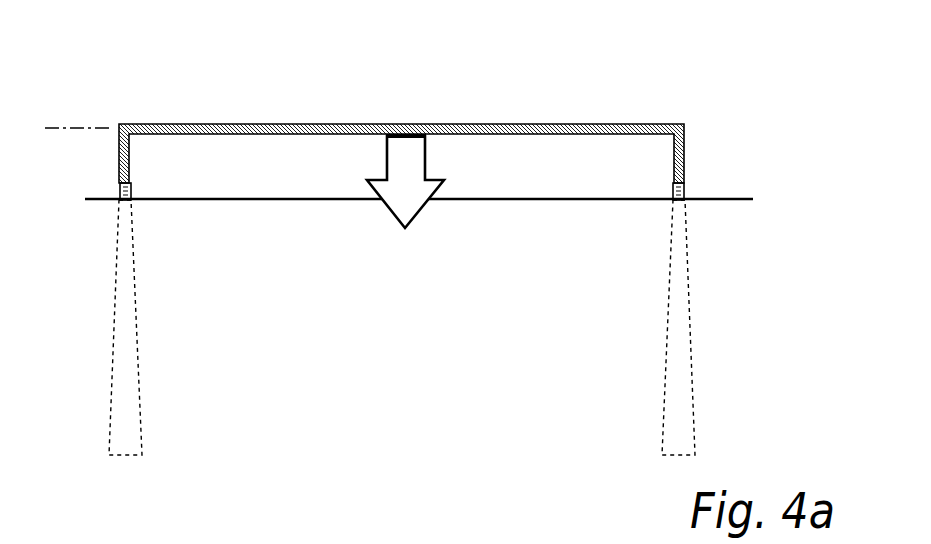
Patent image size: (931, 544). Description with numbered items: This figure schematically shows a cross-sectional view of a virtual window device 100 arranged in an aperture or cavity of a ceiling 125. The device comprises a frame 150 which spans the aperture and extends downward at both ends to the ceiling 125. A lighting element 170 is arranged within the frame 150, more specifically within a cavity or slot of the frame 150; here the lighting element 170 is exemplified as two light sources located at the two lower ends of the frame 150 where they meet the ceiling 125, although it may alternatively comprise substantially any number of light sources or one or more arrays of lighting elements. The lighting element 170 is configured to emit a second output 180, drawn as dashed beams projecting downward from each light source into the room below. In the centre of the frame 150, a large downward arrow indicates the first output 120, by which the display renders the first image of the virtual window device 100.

The virtual window device 100 is at (419, 258).
The first output 120 is at (388, 203).
The ceiling 125 is at (97, 193).
The frame 150 is at (685, 158).
The lighting element 170 is at (131, 200).
The second output 180 is at (125, 407).